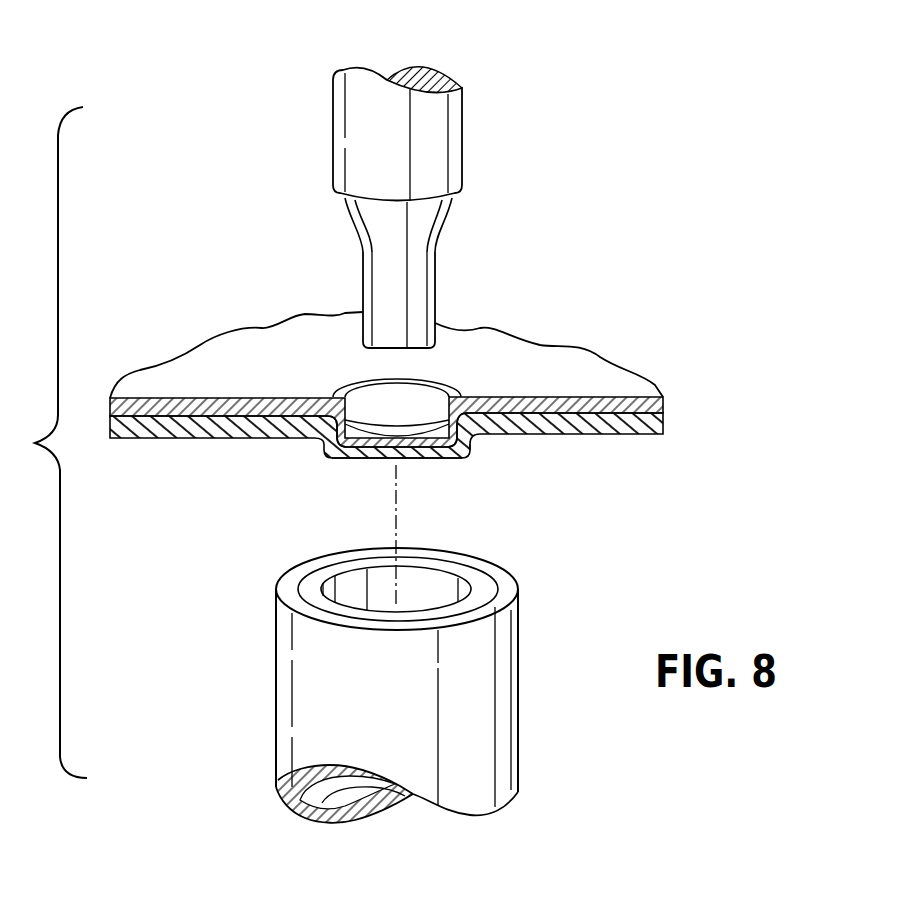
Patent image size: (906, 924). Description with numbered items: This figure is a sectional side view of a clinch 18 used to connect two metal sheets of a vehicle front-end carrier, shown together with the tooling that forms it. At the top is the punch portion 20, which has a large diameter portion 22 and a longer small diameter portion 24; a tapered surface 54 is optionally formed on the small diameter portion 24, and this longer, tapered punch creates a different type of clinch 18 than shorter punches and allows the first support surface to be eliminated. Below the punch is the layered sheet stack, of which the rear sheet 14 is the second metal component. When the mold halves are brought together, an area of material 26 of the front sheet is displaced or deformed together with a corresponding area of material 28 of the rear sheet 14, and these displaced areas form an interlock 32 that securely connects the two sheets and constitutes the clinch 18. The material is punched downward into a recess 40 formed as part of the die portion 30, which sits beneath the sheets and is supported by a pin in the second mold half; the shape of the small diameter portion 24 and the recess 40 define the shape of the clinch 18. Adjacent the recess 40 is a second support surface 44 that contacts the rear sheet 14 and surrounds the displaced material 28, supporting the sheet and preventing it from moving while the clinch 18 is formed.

The rear sheet 14 is at (565, 435).
The clinch 18 is at (320, 463).
The punch portion 20 is at (467, 147).
The large diameter portion 22 is at (348, 150).
The small diameter portion 24 is at (420, 286).
The area of material 26 is at (382, 428).
The area of material 28 is at (377, 460).
The die portion 30 is at (270, 722).
The interlock 32 is at (474, 459).
The recess 40 is at (346, 584).
The second support surface 44 is at (480, 588).
The tapered surface 54 is at (346, 200).